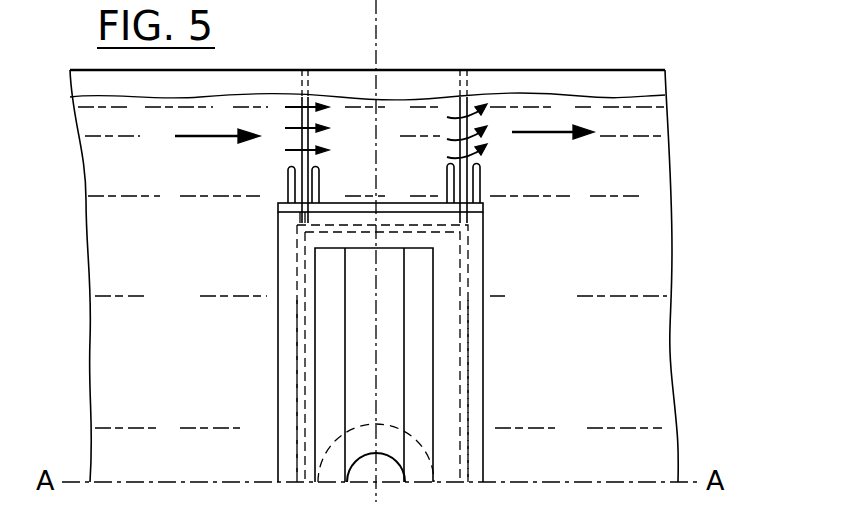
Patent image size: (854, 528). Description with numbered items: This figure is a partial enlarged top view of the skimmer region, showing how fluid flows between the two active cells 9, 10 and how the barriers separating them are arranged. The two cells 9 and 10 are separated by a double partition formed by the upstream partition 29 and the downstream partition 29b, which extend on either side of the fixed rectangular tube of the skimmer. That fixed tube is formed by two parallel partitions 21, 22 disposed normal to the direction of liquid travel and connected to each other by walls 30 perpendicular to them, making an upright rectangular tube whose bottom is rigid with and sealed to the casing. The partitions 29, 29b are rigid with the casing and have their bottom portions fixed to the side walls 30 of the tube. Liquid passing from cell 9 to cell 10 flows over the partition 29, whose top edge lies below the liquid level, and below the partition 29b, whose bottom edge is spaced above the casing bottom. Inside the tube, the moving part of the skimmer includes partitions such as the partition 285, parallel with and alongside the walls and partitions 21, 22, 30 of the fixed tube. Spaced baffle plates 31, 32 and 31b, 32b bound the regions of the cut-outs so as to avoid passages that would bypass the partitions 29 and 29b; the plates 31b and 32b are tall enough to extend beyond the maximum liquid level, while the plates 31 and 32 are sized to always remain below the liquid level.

The active cell 9 is at (183, 314).
The active cell 10 is at (590, 353).
The parallel partition 21 is at (297, 412).
The parallel partition 22 is at (470, 418).
The partition 29 is at (306, 160).
The downstream partition 29b is at (468, 100).
The wall 30 is at (442, 232).
The baffle plate 31 is at (287, 192).
The baffle plate 31b is at (448, 182).
The baffle plate 32 is at (320, 187).
The baffle plate 32b is at (483, 183).
The partition 285 is at (393, 249).